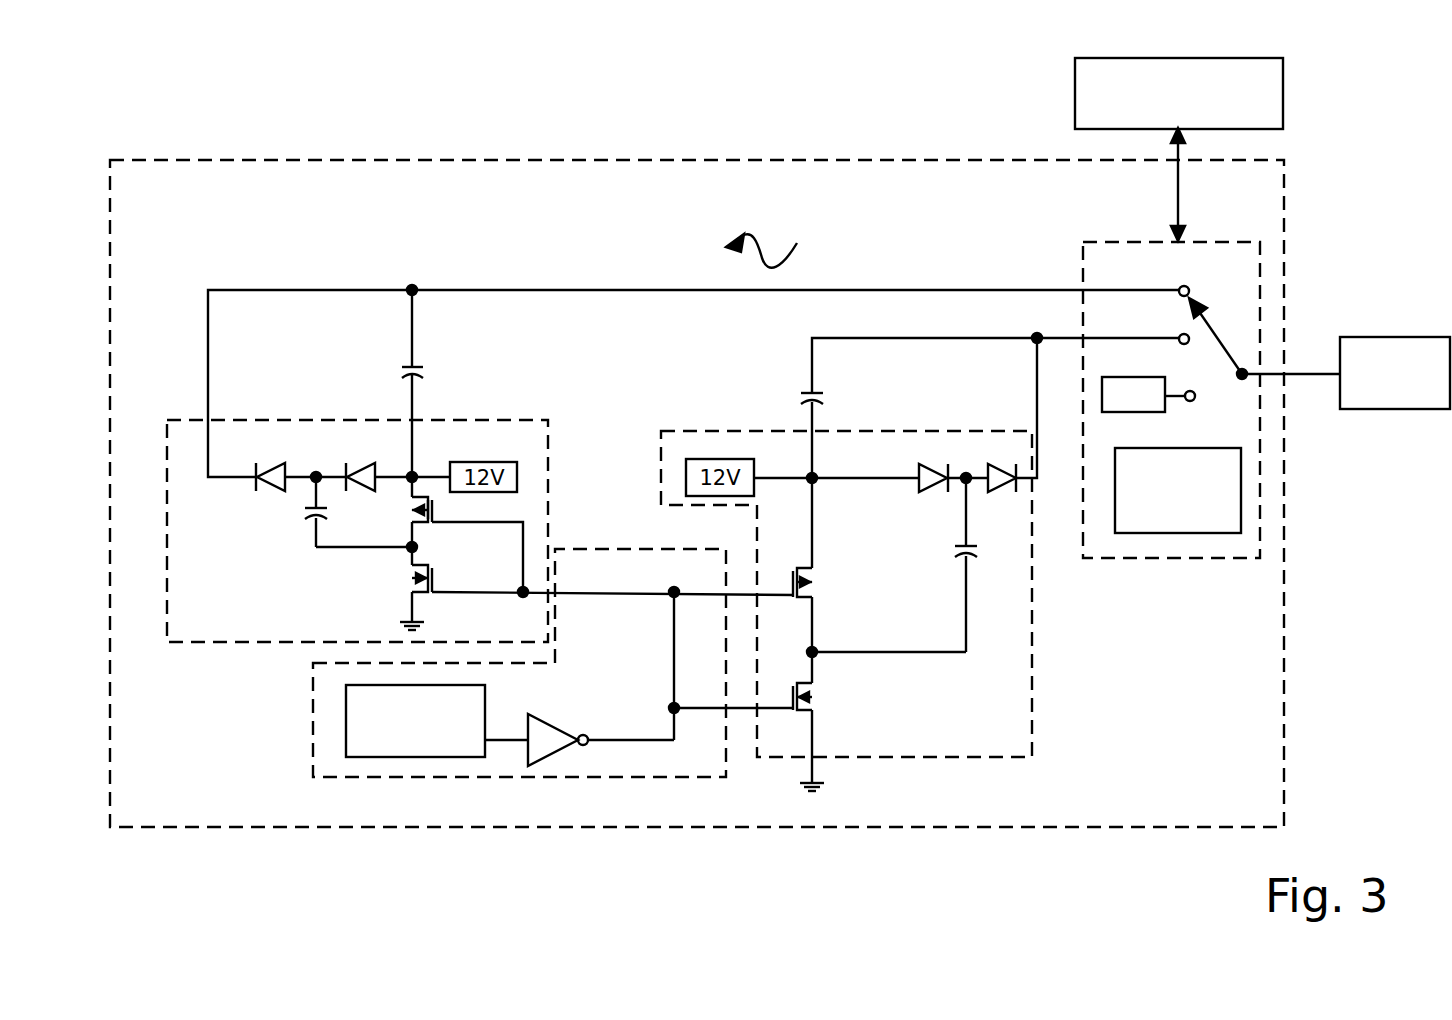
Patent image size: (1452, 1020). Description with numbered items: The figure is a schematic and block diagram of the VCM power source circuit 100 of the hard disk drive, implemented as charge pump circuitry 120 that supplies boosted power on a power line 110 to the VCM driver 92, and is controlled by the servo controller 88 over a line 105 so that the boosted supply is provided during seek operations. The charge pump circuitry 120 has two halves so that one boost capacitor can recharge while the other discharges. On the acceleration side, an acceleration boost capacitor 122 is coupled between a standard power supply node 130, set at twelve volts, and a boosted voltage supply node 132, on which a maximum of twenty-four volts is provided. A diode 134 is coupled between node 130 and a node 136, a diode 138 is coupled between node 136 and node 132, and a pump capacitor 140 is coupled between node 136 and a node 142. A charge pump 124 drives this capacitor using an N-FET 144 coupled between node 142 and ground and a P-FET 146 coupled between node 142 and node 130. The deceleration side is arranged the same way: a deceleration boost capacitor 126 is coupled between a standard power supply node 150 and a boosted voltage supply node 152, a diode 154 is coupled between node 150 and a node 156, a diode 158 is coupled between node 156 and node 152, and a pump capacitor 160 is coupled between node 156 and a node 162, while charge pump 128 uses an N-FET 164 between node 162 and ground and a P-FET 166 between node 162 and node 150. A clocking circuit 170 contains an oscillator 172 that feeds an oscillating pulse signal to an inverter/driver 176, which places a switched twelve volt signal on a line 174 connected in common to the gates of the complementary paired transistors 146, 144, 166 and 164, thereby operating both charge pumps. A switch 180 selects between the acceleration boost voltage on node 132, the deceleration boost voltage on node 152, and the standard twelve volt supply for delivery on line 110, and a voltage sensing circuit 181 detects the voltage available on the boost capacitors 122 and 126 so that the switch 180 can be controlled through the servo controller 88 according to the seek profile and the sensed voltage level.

The servo controller 88 is at (1286, 100).
The VCM driver 92 is at (1388, 337).
The VCM power source circuit 100 is at (588, 160).
The line 105 is at (1182, 156).
The power line 110 is at (1312, 374).
The charge pump circuitry 120 is at (780, 240).
The acceleration boost capacitor 122 is at (400, 374).
The charge pump 124 is at (230, 643).
The deceleration boost capacitor 126 is at (824, 392).
The charge pump 128 is at (932, 758).
The standard power supply node 130 is at (416, 474).
The boosted voltage supply node 132 is at (414, 288).
The diode 134 is at (362, 470).
The node 136 is at (318, 472).
The diode 138 is at (272, 470).
The pump capacitor 140 is at (300, 514).
The node 142 is at (418, 550).
The N-FET 144 is at (440, 590).
The P-FET 146 is at (440, 520).
The standard power supply node 150 is at (816, 482).
The boosted voltage supply node 152 is at (1040, 336).
The diode 154 is at (918, 474).
The node 156 is at (966, 474).
The diode 158 is at (1010, 494).
The pump capacitor 160 is at (960, 550).
The node 162 is at (818, 652).
The N-FET 164 is at (822, 704).
The P-FET 166 is at (822, 586).
The clocking circuit 170 is at (470, 778).
The oscillator 172 is at (486, 696).
The line 174 is at (644, 740).
The inverter/driver 176 is at (556, 730).
The switch 180 is at (1228, 241).
The voltage sensing circuit 181 is at (1167, 534).